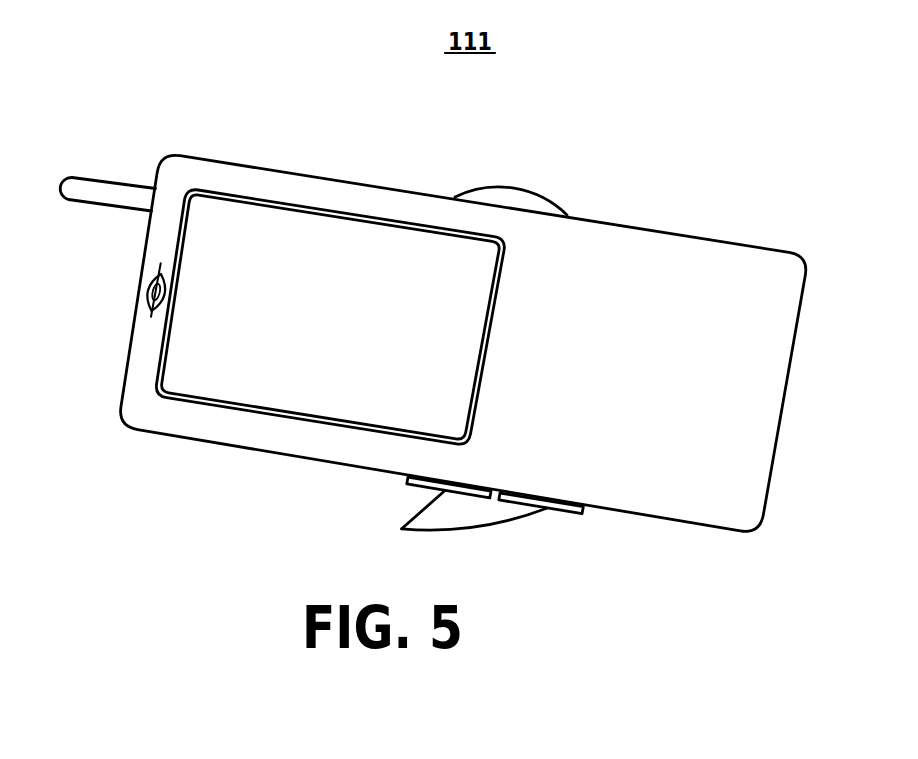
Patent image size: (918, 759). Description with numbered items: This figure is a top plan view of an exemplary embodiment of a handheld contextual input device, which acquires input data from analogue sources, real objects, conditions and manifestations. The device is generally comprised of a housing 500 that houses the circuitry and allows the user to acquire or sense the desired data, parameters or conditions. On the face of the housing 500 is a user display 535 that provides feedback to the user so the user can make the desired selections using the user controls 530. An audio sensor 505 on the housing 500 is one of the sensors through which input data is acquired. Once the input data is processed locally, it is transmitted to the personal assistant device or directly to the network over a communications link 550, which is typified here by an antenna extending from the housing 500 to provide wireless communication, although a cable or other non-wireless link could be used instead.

The housing 500 is at (720, 268).
The audio sensor 505 is at (147, 280).
The user controls 530 is at (508, 187).
The user display 535 is at (285, 232).
The communications link 550 is at (89, 189).